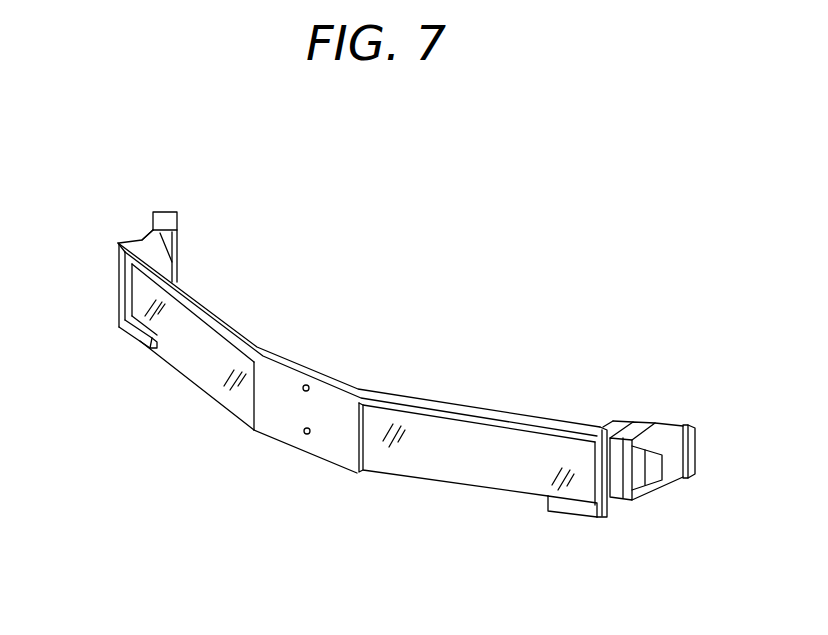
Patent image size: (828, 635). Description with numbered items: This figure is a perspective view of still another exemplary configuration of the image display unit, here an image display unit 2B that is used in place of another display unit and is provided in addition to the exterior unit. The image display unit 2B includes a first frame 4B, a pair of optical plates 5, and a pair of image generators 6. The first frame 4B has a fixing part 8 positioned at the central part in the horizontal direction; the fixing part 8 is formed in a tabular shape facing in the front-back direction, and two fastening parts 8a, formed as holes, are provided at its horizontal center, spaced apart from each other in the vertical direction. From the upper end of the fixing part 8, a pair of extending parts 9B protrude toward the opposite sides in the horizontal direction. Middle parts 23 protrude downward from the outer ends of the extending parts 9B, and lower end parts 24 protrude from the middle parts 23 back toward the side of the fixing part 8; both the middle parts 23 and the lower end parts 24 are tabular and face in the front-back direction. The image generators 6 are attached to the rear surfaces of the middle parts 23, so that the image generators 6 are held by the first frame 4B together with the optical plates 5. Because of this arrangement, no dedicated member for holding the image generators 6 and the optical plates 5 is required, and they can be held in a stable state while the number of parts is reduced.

The image display unit 2B is at (540, 408).
The extending parts 9B is at (208, 303).
The fixing part 8 is at (338, 397).
The first frame 4B is at (283, 380).
The fastening parts 8a is at (304, 391).
The optical plates 5 is at (196, 377).
The middle parts 23 is at (120, 288).
The lower end parts 24 is at (130, 330).
The image generators 6 is at (141, 243).